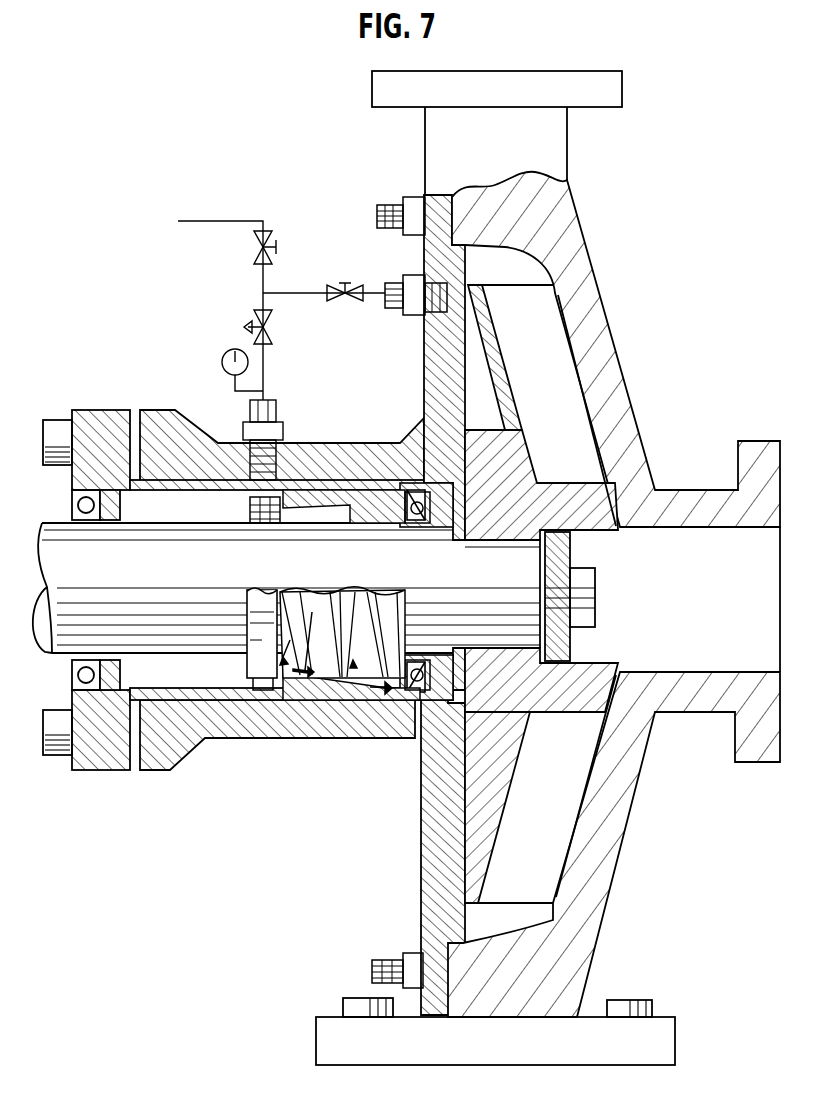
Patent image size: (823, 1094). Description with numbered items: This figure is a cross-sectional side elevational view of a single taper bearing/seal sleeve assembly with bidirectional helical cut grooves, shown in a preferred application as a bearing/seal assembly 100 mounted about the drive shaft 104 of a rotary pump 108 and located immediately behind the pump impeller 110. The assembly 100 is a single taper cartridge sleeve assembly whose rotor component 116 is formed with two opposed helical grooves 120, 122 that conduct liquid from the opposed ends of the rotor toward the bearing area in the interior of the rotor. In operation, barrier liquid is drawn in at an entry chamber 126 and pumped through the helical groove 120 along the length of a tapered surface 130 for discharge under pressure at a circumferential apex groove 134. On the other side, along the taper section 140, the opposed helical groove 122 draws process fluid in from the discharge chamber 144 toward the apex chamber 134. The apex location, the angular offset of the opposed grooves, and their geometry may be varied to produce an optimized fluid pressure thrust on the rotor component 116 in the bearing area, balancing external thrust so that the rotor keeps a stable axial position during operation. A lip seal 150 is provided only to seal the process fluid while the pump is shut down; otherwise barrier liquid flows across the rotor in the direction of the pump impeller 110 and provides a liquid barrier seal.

The bearing/seal assembly 100 is at (243, 630).
The drive shaft 104 is at (56, 678).
The rotary pump 108 is at (600, 284).
The pump impeller 110 is at (515, 395).
The rotor component 116 is at (300, 678).
The helical groove 120 is at (312, 612).
The helical groove 122 is at (353, 660).
The entry chamber 126 is at (218, 492).
The tapered surface 130 is at (283, 657).
The circumferential apex groove 134 is at (345, 492).
The taper section 140 is at (305, 670).
The discharge chamber 144 is at (385, 688).
The lip seal 150 is at (412, 703).